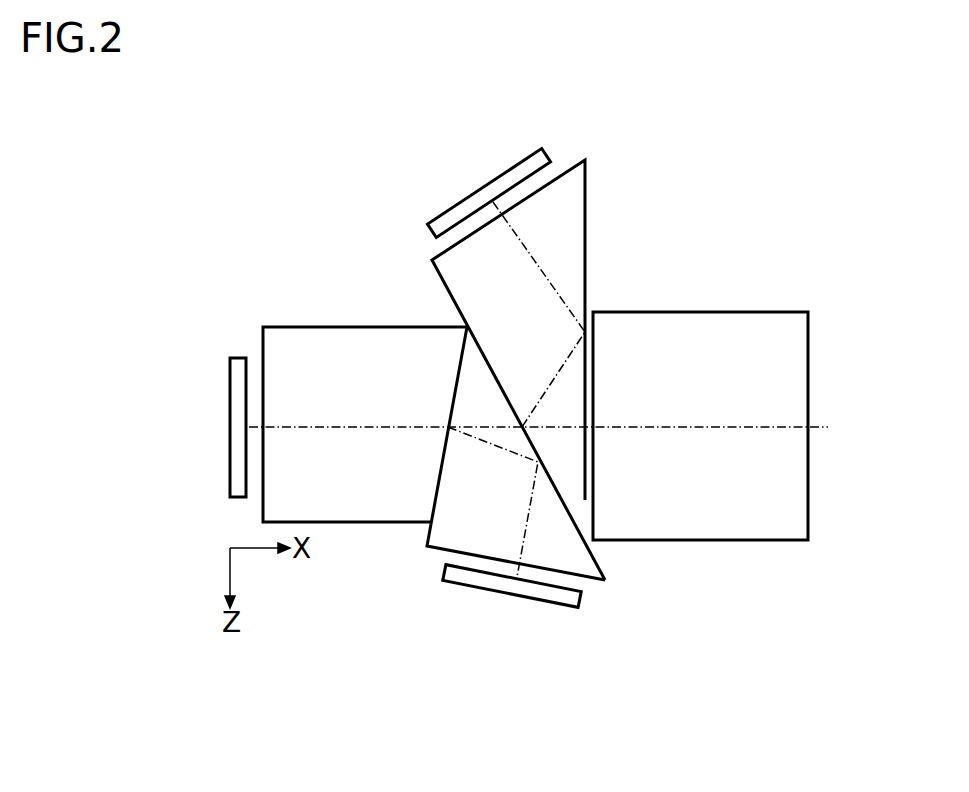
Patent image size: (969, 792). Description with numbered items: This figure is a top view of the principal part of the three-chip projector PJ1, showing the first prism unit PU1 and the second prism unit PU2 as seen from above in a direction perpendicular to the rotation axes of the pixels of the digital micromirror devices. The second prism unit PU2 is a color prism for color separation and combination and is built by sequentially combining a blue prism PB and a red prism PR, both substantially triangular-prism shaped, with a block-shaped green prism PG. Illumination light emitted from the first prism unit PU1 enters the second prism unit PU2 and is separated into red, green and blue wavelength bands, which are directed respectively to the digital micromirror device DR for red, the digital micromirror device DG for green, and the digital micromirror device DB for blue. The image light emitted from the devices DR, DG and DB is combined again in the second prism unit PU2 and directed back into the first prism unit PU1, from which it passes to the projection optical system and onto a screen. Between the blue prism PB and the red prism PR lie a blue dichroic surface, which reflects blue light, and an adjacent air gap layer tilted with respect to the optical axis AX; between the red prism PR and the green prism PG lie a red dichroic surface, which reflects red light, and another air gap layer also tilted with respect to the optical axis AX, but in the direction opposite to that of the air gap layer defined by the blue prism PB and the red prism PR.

The projector PJ1 is at (786, 155).
The first prism unit PU1 is at (794, 525).
The second prism unit PU2 is at (377, 422).
The optical axis AX is at (562, 427).
The digital micromirror device for green DG is at (230, 422).
The digital micromirror device for blue DB is at (482, 187).
The digital micromirror device for red DR is at (512, 613).
The green prism PG is at (331, 496).
The blue prism PB is at (508, 290).
The red prism PR is at (493, 540).